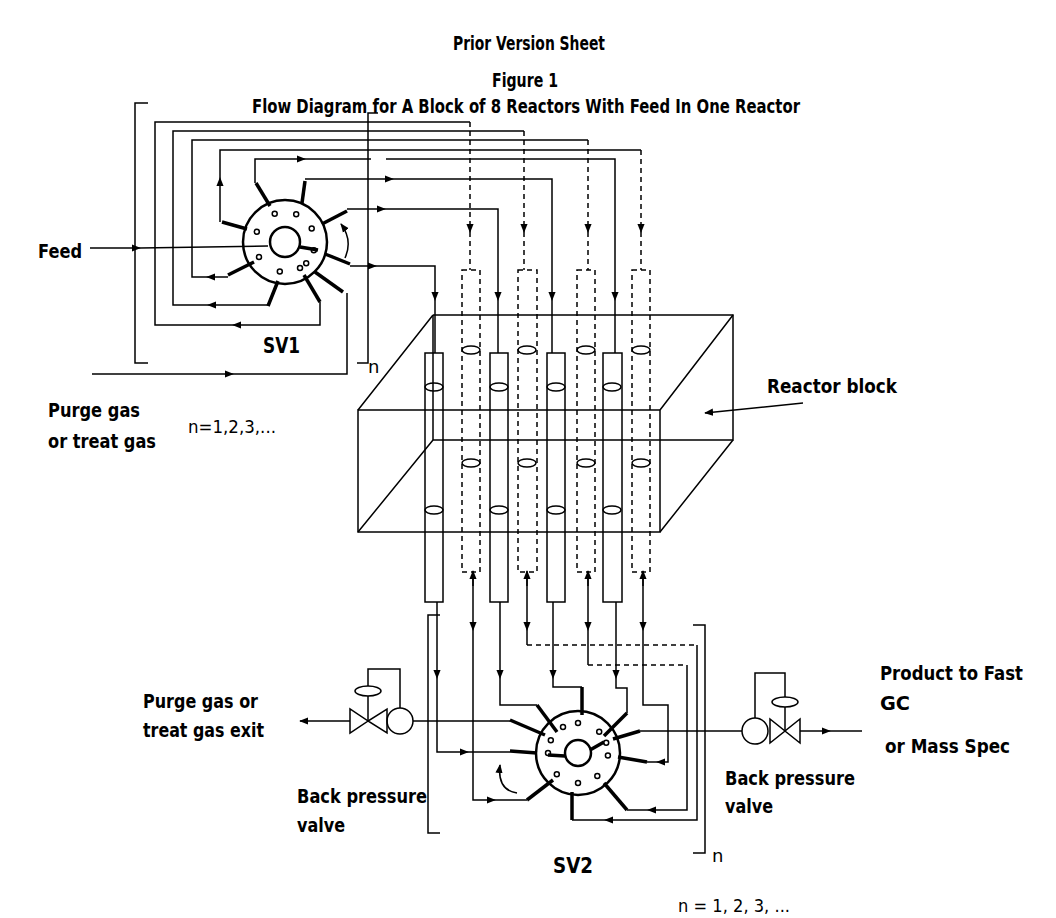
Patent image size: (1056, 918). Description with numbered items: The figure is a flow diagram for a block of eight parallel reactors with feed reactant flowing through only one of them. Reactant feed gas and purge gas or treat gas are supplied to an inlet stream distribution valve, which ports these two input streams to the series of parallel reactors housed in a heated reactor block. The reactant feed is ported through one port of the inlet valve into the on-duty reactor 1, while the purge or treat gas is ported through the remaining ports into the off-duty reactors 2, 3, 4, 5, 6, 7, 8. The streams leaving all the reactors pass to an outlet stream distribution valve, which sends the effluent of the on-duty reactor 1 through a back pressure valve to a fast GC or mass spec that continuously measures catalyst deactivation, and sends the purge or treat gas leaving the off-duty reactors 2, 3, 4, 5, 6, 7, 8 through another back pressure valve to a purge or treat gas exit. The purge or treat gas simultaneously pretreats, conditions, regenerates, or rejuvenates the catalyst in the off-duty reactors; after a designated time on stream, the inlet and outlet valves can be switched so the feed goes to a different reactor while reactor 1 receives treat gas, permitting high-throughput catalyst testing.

The on-duty reactor 1 is at (433, 501).
The off-duty reactor 2 is at (437, 450).
The off-duty reactor 3 is at (436, 427).
The off-duty reactor 4 is at (429, 442).
The off-duty reactor 5 is at (436, 495).
The off-duty reactor 6 is at (432, 540).
The off-duty reactor 7 is at (429, 559).
The off-duty reactor 8 is at (484, 551).